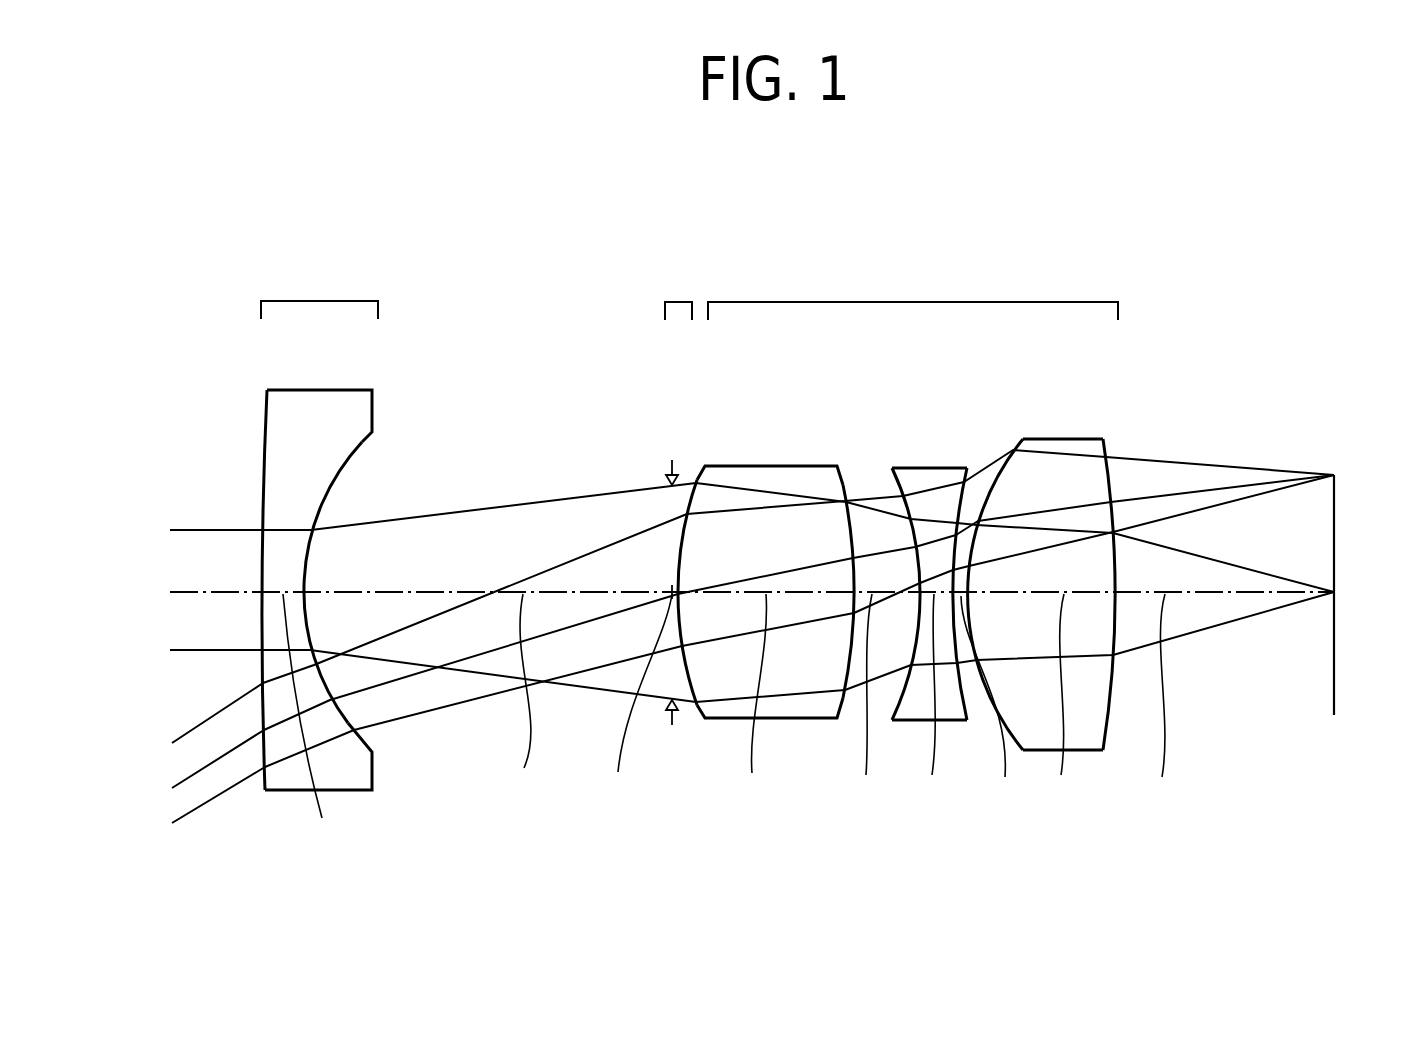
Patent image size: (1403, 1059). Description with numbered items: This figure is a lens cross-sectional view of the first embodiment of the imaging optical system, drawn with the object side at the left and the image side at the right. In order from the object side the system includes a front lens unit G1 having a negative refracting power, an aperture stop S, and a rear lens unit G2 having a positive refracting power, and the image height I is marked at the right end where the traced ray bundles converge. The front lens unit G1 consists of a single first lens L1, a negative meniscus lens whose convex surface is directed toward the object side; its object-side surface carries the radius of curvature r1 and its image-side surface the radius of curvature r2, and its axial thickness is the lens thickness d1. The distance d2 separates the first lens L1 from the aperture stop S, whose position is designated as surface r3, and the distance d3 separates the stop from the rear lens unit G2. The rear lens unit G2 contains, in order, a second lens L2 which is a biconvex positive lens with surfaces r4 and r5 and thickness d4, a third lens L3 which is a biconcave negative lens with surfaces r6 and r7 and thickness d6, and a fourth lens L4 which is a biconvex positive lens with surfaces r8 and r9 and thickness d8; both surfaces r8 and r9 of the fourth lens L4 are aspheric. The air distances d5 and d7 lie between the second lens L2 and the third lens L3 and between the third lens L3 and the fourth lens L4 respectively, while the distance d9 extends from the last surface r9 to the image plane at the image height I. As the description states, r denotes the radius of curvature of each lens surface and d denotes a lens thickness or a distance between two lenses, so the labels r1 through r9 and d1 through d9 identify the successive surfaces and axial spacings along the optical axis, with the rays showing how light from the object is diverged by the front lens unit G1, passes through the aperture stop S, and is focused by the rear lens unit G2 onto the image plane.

The front lens unit G1 is at (320, 572).
The rear lens unit G2 is at (927, 558).
The aperture stop S is at (658, 493).
The image height I is at (1336, 517).
The first lens L1 is at (360, 790).
The second lens L2 is at (798, 718).
The third lens L3 is at (948, 720).
The fourth lens L4 is at (1092, 750).
The radius of curvature of lens surface r1 is at (263, 440).
The radius of curvature of lens surface r2 is at (360, 443).
The radius of curvature of lens surface r3 is at (670, 463).
The radius of curvature of lens surface r4 is at (700, 478).
The radius of curvature of lens surface r5 is at (838, 480).
The radius of curvature of lens surface r6 is at (885, 484).
The radius of curvature of lens surface r7 is at (963, 478).
The radius of curvature of lens surface r8 is at (1012, 456).
The radius of curvature of lens surface r9 is at (1101, 460).
The lens thickness d1 is at (309, 724).
The distance between two lenses d2 is at (521, 703).
The distance between two lenses d3 is at (637, 703).
The lens thickness d4 is at (749, 703).
The distance between two lenses d5 is at (862, 703).
The lens thickness d6 is at (927, 703).
The distance between two lenses d7 is at (990, 704).
The lens thickness d8 is at (1057, 703).
The distance between two lenses d9 is at (1160, 703).